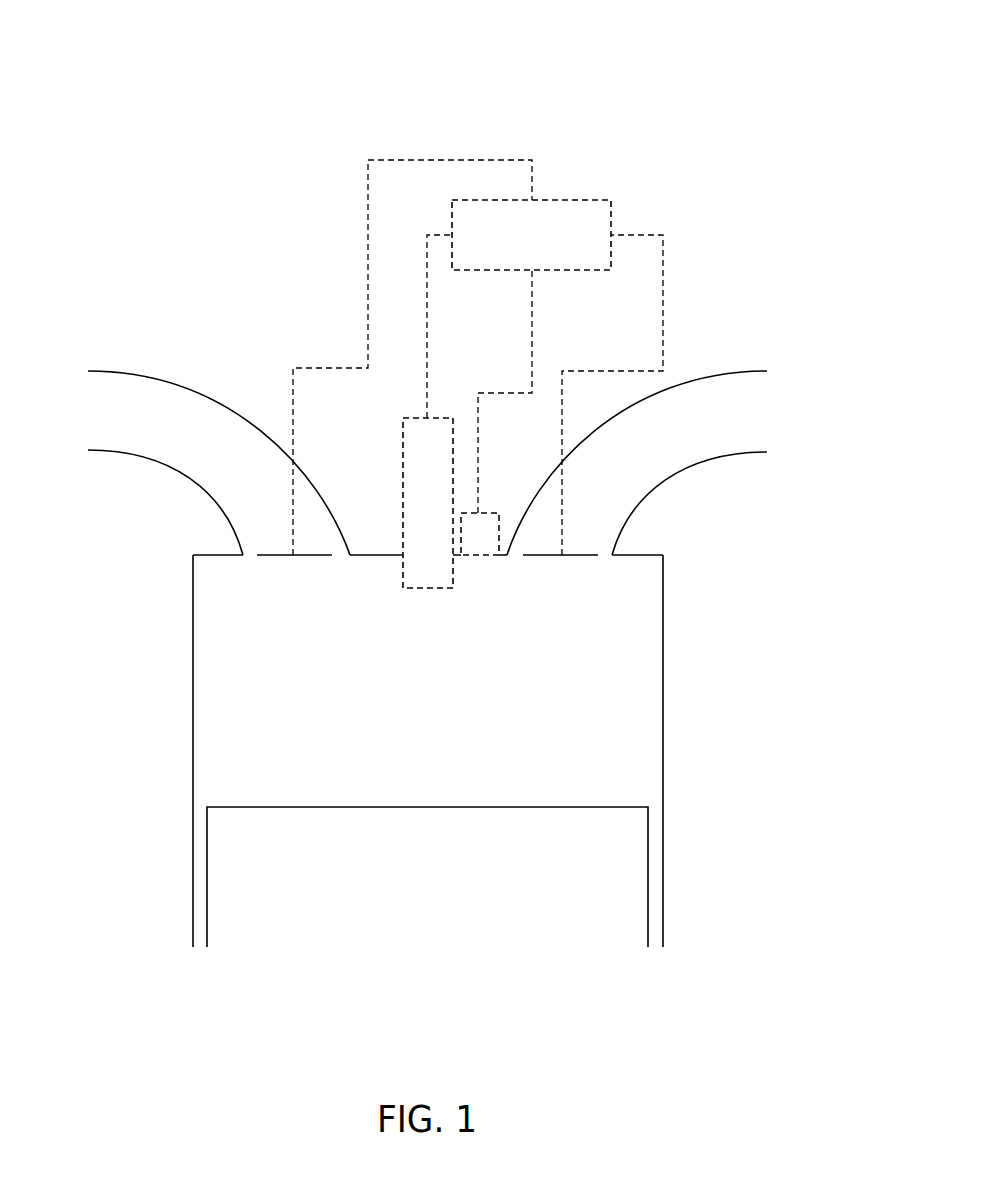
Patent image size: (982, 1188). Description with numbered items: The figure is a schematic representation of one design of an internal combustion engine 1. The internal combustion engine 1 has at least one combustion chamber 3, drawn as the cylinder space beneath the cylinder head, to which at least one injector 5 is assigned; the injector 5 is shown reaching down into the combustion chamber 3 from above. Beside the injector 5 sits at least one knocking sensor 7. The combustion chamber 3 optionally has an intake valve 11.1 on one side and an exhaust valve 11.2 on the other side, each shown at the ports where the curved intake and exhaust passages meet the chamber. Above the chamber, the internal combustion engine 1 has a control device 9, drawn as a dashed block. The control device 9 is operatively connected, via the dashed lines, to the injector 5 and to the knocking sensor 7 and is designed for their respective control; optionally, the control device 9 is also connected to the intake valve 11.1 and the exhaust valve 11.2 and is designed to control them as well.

The internal combustion engine 1 is at (615, 90).
The combustion chamber 3 is at (622, 758).
The injector 5 is at (402, 443).
The knocking sensor 7 is at (478, 535).
The control device 9 is at (558, 200).
The intake valve 11.1 is at (277, 555).
The exhaust valve 11.2 is at (580, 555).